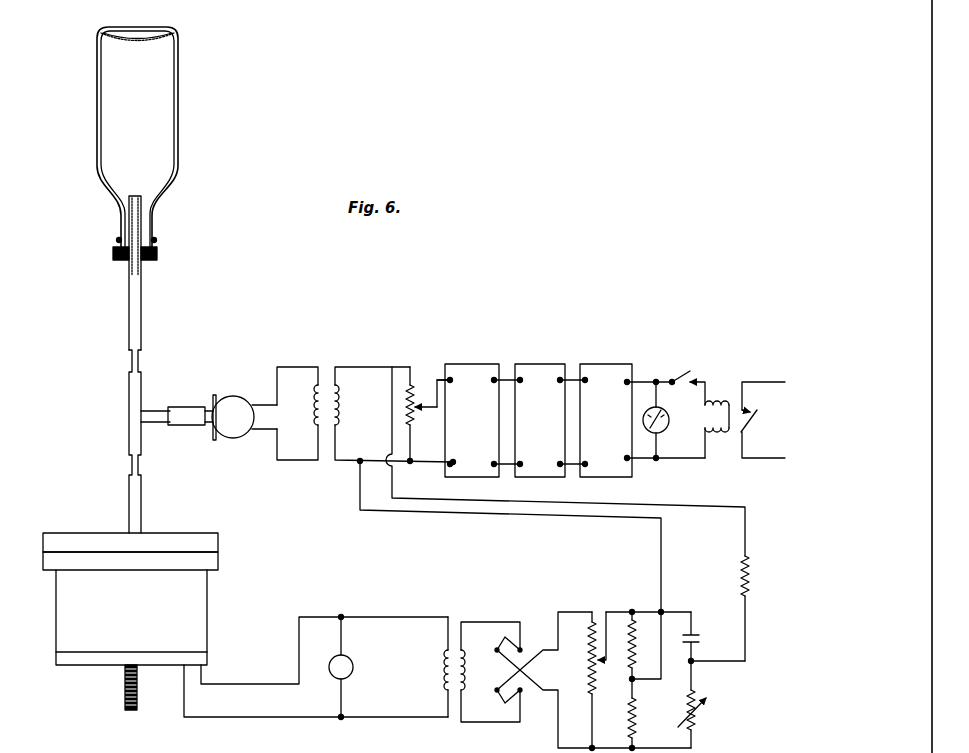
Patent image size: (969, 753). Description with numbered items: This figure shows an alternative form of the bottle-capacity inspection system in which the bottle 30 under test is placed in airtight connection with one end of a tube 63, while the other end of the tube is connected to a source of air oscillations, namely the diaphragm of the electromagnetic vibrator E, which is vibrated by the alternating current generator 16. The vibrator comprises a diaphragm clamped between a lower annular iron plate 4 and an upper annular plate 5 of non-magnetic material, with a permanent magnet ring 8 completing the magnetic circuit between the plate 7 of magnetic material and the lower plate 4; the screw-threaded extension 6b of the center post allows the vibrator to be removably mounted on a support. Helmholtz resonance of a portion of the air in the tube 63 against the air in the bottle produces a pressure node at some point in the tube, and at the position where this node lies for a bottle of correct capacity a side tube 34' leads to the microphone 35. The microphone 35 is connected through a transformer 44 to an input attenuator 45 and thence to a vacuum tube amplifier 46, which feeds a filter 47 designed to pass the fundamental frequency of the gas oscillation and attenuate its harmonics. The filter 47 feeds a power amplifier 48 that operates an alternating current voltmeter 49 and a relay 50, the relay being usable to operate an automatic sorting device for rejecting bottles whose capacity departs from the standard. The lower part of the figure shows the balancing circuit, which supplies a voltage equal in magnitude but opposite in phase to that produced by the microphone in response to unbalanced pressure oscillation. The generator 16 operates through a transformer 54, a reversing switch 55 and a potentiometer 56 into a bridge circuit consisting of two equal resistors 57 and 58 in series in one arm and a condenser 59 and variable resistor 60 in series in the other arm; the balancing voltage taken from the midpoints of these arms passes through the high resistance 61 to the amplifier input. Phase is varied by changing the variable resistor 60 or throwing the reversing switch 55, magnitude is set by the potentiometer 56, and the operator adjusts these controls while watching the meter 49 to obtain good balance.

The bottle 30 is at (176, 120).
The tube 63 is at (141, 303).
The side tube 34' is at (178, 425).
The microphone 35 is at (235, 438).
The transformer 44 is at (328, 372).
The input attenuator 45 is at (419, 377).
The vacuum tube amplifier 46 is at (476, 363).
The filter 47 is at (538, 363).
The power amplifier 48 is at (604, 366).
The alternating current voltmeter 49 is at (647, 402).
The relay 50 is at (718, 402).
The upper annular plate 5 is at (218, 543).
The lower annular iron plate 4 is at (218, 565).
The electromagnetic vibrator E is at (214, 606).
The permanent magnet ring 8 is at (207, 633).
The plate 7 is at (64, 660).
The screw-threaded extension 6b is at (124, 673).
The alternating current generator 16 is at (353, 660).
The transformer 54 is at (440, 672).
The reversing switch 55 is at (530, 648).
The potentiometer 56 is at (588, 664).
The resistor 57 is at (625, 628).
The resistor 58 is at (617, 715).
The condenser 59 is at (699, 634).
The variable resistor 60 is at (703, 722).
The high resistance 61 is at (750, 574).